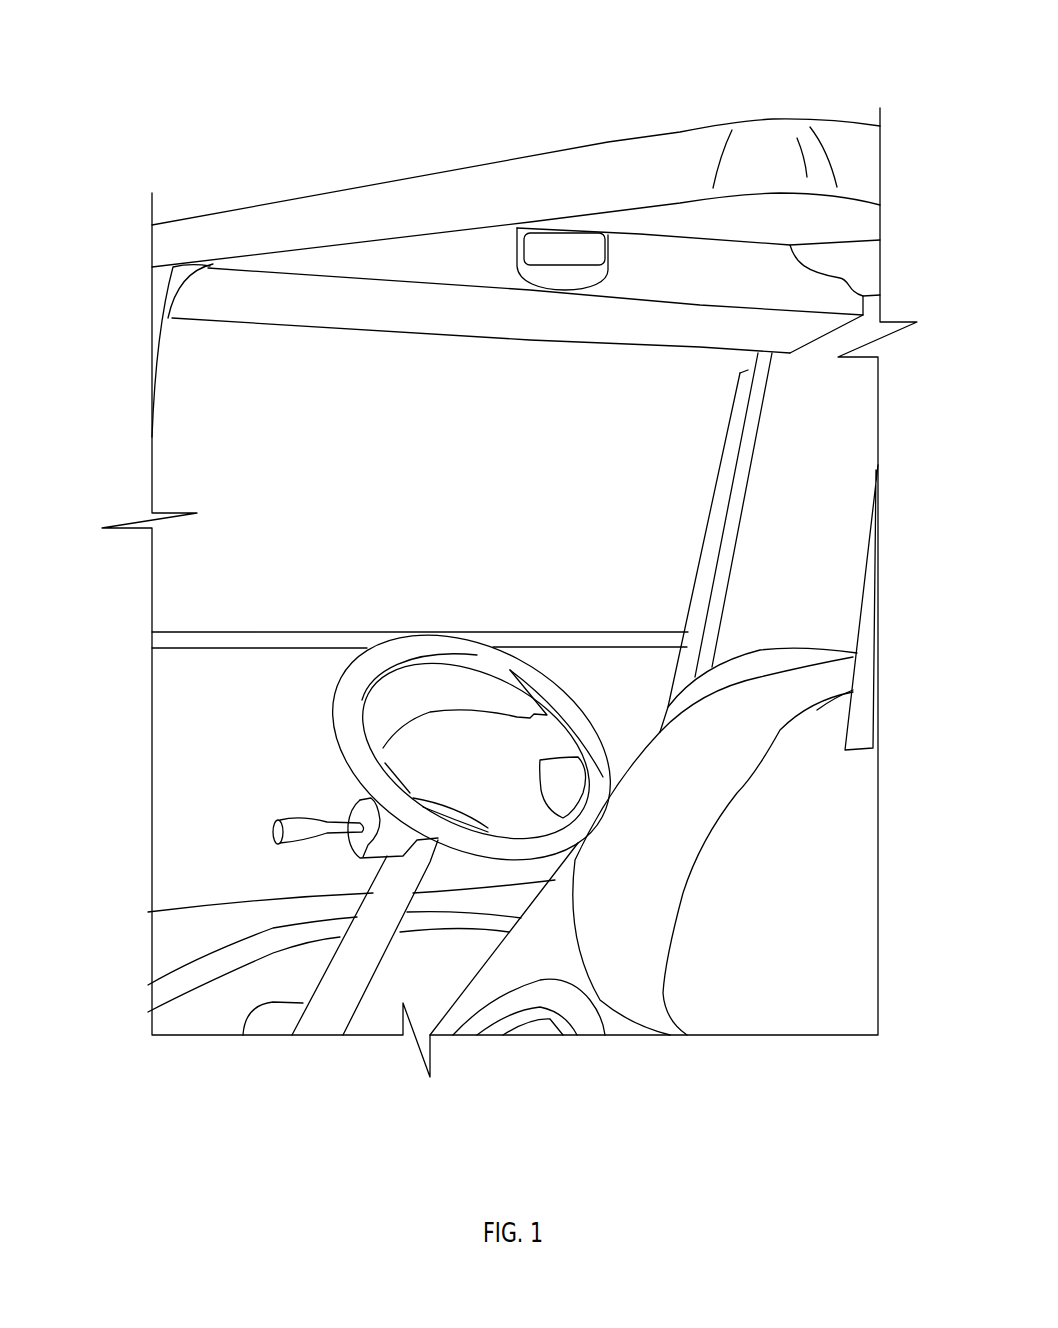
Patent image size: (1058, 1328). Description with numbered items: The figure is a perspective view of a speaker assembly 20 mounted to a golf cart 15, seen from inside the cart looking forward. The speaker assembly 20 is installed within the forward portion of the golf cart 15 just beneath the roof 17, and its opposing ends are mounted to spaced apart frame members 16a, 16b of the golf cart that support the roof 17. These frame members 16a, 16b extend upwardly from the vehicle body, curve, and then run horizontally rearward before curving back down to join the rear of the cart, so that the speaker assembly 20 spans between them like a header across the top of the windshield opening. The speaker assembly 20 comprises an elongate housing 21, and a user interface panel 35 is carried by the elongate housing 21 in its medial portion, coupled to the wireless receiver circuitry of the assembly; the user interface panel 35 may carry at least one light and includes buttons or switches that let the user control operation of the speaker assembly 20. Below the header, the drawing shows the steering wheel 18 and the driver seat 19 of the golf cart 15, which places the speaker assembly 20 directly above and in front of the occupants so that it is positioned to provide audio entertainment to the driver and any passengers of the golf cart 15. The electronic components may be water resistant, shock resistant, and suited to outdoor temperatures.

The golf cart 15 is at (141, 170).
The frame member 16a is at (152, 333).
The frame member 16b is at (767, 383).
The roof 17 is at (608, 142).
The steering wheel 18 is at (340, 742).
The driver seat 19 is at (460, 1035).
The speaker assembly 20 is at (258, 323).
The elongate housing 21 is at (343, 313).
The user interface panel 35 is at (545, 265).